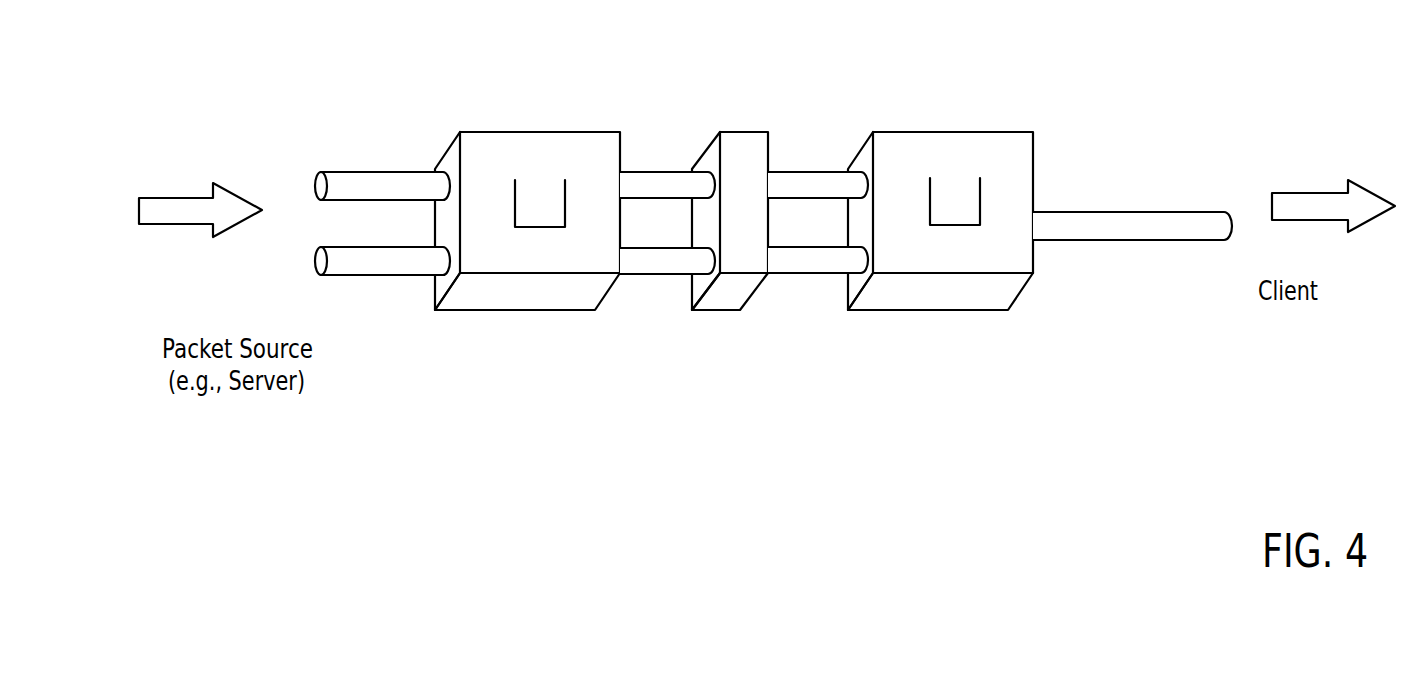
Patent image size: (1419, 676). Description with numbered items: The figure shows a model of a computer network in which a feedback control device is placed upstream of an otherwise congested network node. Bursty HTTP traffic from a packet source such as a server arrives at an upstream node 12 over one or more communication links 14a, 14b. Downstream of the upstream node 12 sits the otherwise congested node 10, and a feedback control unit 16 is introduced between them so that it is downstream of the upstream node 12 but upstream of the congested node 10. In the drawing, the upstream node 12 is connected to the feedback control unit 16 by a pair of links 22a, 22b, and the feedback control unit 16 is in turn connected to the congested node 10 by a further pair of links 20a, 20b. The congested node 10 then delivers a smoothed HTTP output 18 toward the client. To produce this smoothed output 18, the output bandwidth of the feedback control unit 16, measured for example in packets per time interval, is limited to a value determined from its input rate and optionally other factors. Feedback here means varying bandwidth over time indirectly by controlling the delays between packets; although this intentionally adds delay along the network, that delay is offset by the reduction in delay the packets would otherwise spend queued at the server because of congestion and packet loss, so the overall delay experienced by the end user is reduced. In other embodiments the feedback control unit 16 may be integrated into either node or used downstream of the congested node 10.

The congested node 10 is at (941, 142).
The upstream node 12 is at (538, 143).
The communication link 14a is at (375, 169).
The communication link 14b is at (375, 243).
The feedback control unit 16 is at (738, 308).
The smoothed HTTP output 18 is at (1132, 211).
The link between control node and congested node 20a is at (818, 168).
The link between control node and congested node 20b is at (818, 240).
The link between upstream node and control node 22a is at (667, 169).
The link between upstream node and control node 22b is at (667, 241).